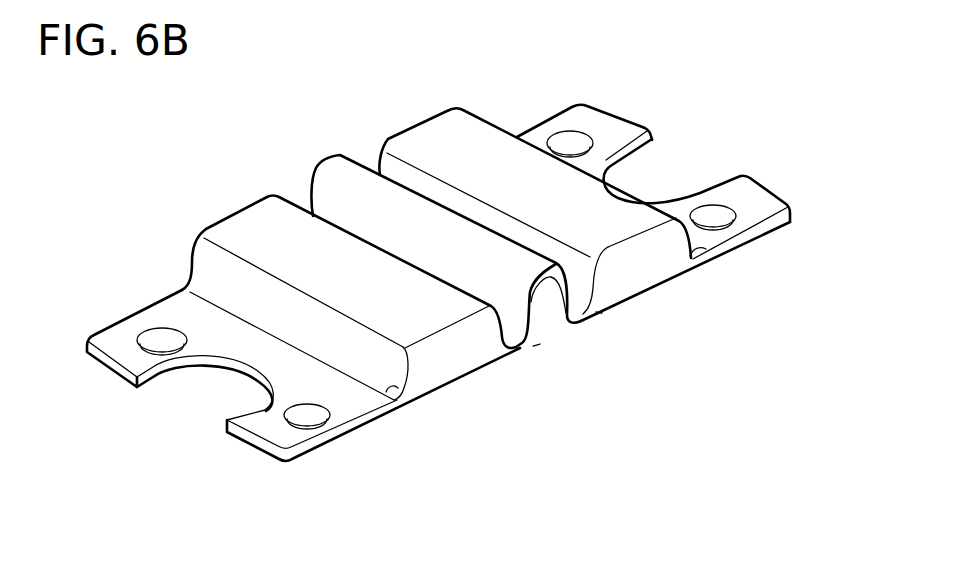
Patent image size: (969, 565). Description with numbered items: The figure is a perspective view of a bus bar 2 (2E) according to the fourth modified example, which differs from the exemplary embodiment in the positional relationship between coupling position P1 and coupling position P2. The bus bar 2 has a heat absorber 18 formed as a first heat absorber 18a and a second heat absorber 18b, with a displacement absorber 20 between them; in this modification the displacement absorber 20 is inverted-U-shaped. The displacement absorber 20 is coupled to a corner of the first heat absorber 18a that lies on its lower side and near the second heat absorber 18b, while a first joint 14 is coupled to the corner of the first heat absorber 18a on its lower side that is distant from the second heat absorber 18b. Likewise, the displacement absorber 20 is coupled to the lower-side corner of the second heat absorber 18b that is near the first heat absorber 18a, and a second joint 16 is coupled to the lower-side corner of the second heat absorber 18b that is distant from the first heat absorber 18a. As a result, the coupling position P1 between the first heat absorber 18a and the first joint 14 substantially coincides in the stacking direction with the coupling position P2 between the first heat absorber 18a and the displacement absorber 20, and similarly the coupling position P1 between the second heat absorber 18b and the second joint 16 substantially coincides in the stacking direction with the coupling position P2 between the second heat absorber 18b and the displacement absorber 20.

The bus bar 2 is at (433, 277).
The bus bar 2E is at (510, 521).
The first joint 14 is at (103, 327).
The second joint 16 is at (583, 104).
The heat absorber 18 is at (482, 280).
The first heat absorber 18a is at (455, 360).
The second heat absorber 18b is at (642, 275).
The displacement absorber 20 is at (553, 302).
The coupling position P1 is at (695, 258).
The coupling position P2 is at (600, 313).